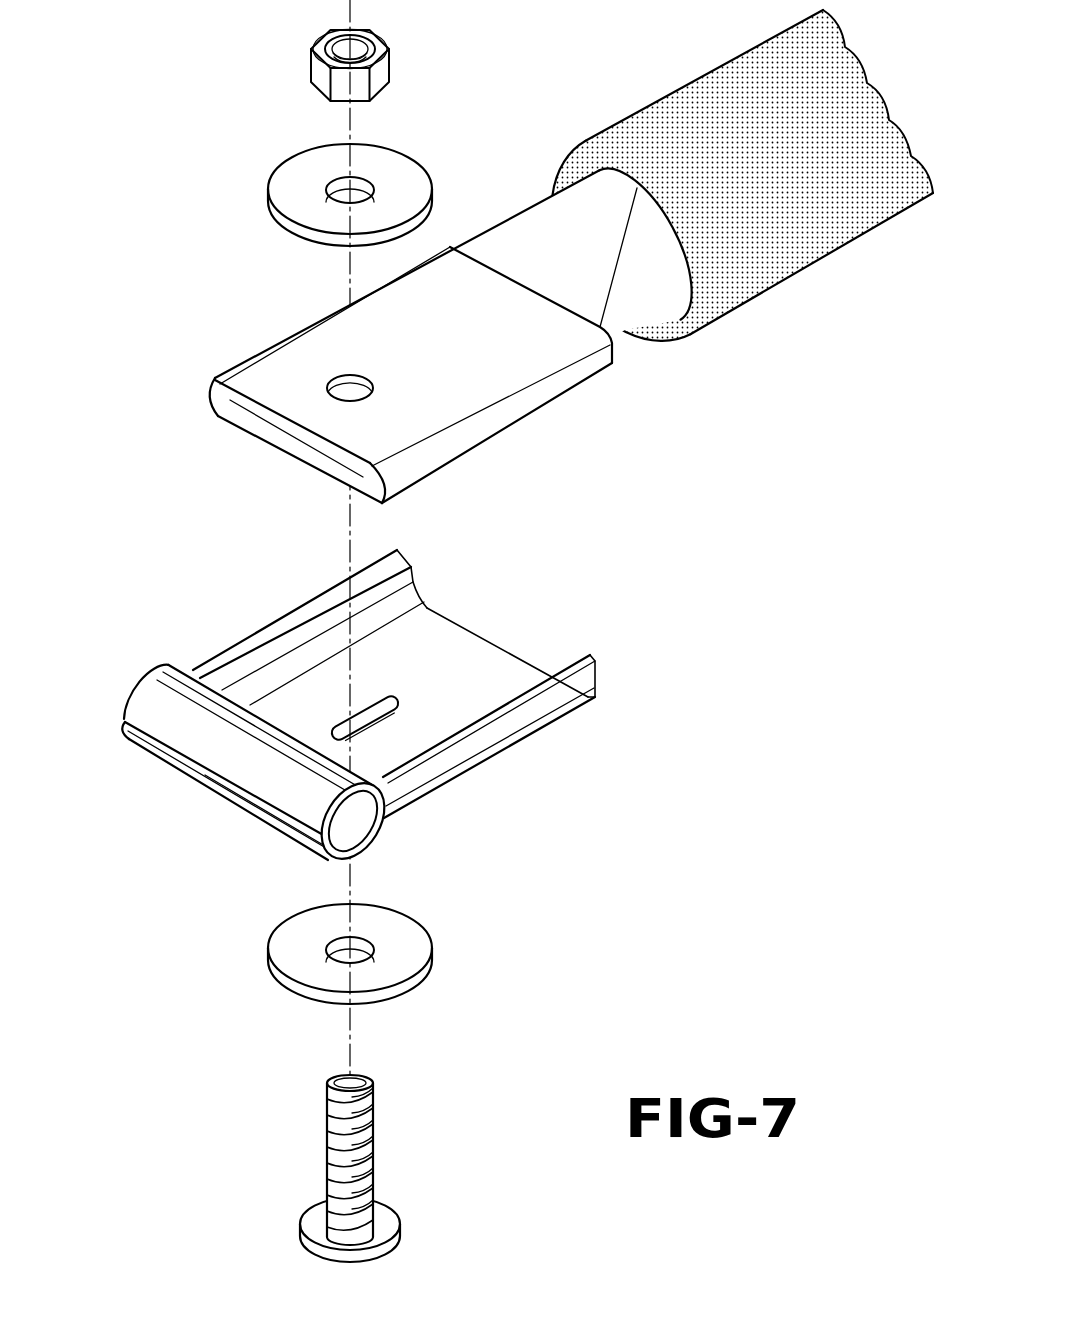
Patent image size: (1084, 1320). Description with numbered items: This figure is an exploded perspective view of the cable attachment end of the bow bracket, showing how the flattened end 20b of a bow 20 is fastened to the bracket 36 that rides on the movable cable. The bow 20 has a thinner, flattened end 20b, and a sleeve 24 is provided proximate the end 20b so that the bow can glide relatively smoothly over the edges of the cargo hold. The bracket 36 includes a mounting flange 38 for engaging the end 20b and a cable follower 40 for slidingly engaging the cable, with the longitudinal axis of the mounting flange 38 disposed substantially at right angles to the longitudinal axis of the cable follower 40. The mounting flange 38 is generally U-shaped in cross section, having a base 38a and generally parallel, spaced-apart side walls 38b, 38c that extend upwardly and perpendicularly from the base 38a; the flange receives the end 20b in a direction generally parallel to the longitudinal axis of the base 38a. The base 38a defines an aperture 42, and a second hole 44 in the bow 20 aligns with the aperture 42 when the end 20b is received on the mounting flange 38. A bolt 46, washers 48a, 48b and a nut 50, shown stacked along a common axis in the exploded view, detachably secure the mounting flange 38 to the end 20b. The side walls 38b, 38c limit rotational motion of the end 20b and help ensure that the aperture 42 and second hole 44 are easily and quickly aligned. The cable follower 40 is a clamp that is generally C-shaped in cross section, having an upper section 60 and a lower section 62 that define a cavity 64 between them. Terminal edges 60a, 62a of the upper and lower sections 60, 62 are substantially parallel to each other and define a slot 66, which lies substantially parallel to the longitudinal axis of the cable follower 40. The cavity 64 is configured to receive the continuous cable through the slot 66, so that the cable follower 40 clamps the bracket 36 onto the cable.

The bow 20 is at (471, 336).
The flattened end 20b is at (520, 425).
The sleeve 24 is at (808, 265).
The bracket 36 is at (379, 716).
The mounting flange 38 is at (443, 674).
The base 38a is at (435, 640).
The side wall 38b is at (582, 678).
The side wall 38c is at (300, 607).
The cable follower 40 is at (256, 736).
The aperture 42 is at (385, 705).
The second hole 44 is at (338, 386).
The bolt 46 is at (378, 1152).
The washer 48a is at (390, 163).
The washer 48b is at (400, 945).
The nut 50 is at (372, 73).
The upper section 60 is at (256, 783).
The terminal edge 60a is at (165, 752).
The lower section 62 is at (265, 822).
The terminal edge 62a is at (205, 775).
The cavity 64 is at (355, 825).
The slot 66 is at (195, 777).